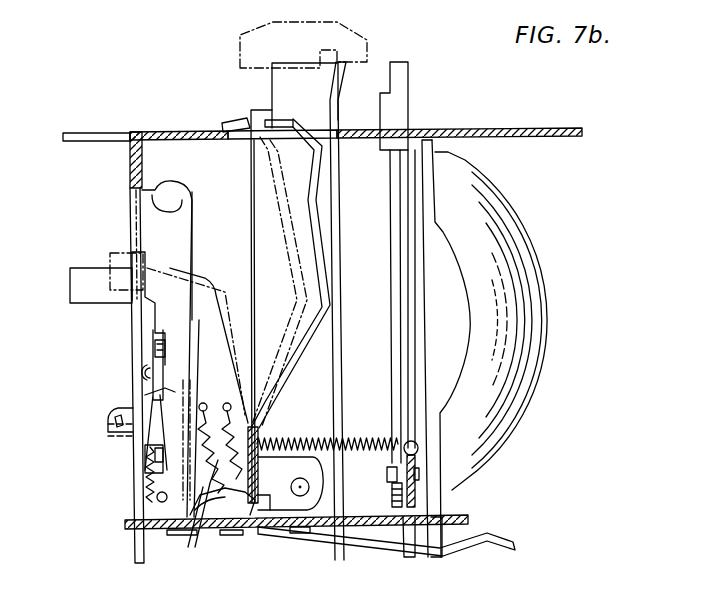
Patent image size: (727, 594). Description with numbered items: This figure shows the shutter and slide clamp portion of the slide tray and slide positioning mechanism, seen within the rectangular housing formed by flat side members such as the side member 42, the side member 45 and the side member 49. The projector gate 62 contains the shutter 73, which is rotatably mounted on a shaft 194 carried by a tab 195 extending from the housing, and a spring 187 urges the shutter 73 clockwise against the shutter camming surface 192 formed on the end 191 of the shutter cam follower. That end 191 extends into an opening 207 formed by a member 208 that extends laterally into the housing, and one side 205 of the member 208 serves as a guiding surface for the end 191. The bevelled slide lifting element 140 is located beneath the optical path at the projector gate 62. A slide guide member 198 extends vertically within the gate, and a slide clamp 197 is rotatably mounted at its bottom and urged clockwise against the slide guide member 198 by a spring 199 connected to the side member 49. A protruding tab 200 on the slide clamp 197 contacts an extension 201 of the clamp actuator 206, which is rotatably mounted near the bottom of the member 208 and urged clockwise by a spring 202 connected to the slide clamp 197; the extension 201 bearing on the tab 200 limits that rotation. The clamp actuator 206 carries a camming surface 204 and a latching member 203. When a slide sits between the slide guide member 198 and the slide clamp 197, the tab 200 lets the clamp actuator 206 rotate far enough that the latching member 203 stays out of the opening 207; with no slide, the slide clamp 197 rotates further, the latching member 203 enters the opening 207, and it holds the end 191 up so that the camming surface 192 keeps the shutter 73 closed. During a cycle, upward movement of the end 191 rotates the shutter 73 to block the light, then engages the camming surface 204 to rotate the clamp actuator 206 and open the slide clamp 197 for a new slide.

The side member 42 is at (160, 131).
The side member 45 is at (258, 533).
The side member 49 is at (403, 358).
The projector gate 62 is at (238, 105).
The shutter 73 is at (120, 417).
The bevelled slide lifting element 140 is at (250, 49).
The spring 187 is at (160, 510).
The end of cam follower 191 is at (150, 347).
The shutter camming surface 192 is at (145, 375).
The shaft 194 is at (113, 423).
The tab 195 is at (110, 437).
The slide clamp 197 is at (300, 119).
The slide guide member 198 is at (341, 150).
The spring 199 is at (383, 440).
The protruding tab 200 is at (211, 514).
The extension 201 is at (290, 483).
The spring 202 is at (212, 440).
The latching member 203 is at (140, 410).
The camming surface 204 is at (165, 388).
The side of member 205 is at (150, 365).
The clamp actuator 206 is at (96, 282).
The opening 207 is at (142, 316).
The member 208 is at (165, 206).